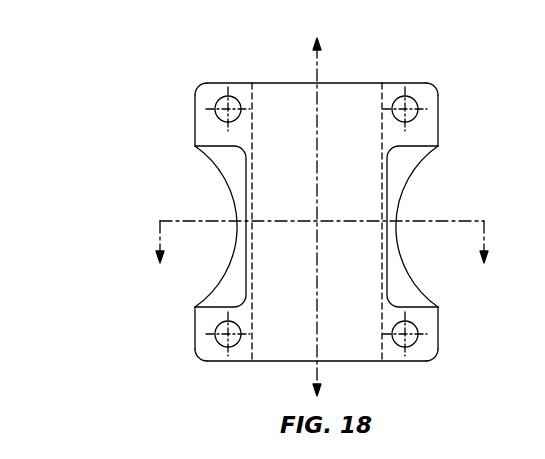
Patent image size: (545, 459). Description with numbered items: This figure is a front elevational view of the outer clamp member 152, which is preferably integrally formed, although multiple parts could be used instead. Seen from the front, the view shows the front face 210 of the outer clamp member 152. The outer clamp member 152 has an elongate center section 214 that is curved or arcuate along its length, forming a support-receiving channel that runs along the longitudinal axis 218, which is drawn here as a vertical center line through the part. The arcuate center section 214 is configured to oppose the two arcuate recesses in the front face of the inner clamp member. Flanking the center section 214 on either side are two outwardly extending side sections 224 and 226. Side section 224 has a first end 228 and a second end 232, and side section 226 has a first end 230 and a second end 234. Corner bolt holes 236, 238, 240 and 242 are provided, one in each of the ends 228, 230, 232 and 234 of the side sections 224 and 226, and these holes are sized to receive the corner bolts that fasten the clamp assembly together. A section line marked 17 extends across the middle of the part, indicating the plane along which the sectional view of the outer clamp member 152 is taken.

The front face 210 is at (285, 330).
The center section 214 is at (284, 93).
The longitudinal axis 218 is at (319, 70).
The side section 224 is at (407, 163).
The side section 226 is at (226, 157).
The first end 228 is at (437, 92).
The first end 230 is at (198, 89).
The second end 232 is at (434, 354).
The second end 234 is at (197, 352).
The corner bolt hole 236 is at (411, 101).
The corner bolt hole 238 is at (222, 117).
The corner bolt hole 240 is at (414, 327).
The corner bolt hole 242 is at (220, 330).
The outer clamp member 152 is at (438, 135).
The section line 17- 17 is at (324, 257).